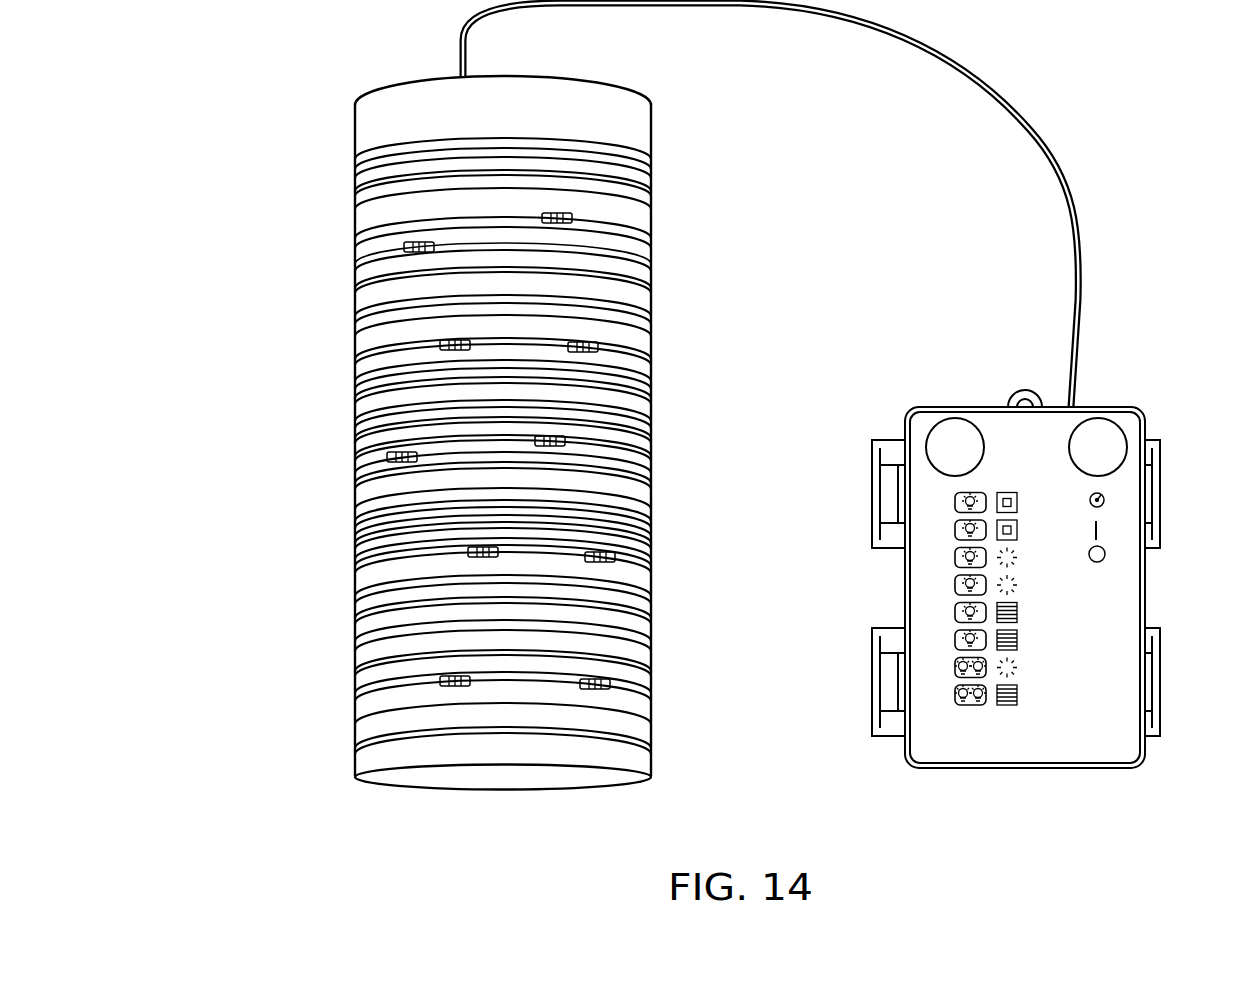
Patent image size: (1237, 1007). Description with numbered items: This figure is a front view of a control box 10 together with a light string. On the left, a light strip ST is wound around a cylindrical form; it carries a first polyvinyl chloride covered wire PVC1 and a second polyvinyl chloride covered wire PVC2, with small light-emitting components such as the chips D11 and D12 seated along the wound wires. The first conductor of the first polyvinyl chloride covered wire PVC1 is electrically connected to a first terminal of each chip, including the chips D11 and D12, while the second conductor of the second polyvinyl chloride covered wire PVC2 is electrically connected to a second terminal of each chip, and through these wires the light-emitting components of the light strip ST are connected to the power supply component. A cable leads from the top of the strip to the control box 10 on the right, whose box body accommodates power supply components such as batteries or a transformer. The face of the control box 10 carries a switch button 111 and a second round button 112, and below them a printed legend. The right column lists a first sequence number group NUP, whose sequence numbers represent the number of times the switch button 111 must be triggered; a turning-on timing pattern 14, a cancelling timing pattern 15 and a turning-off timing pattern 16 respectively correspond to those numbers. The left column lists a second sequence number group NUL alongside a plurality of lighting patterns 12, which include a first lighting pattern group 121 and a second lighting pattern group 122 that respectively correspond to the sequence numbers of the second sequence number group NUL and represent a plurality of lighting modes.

The light strip ST is at (236, 205).
The first polyvinyl chloride covered wire PVC1 is at (372, 228).
The second polyvinyl chloride covered wire PVC2 is at (372, 251).
The chip D11 is at (419, 252).
The chip D12 is at (432, 266).
The control box 10 is at (1130, 466).
The first button 112 is at (937, 438).
The switch button 111 is at (1112, 437).
The lighting patterns 12 is at (1057, 812).
The first lighting pattern group 121 is at (972, 707).
The second lighting pattern group 122 is at (1006, 707).
The second sequence number group NUL is at (928, 693).
The first sequence number group NUP is at (1132, 563).
The turning-on timing pattern 14 is at (1104, 500).
The cancelling timing pattern 15 is at (1098, 532).
The turning-off timing pattern 16 is at (1106, 557).